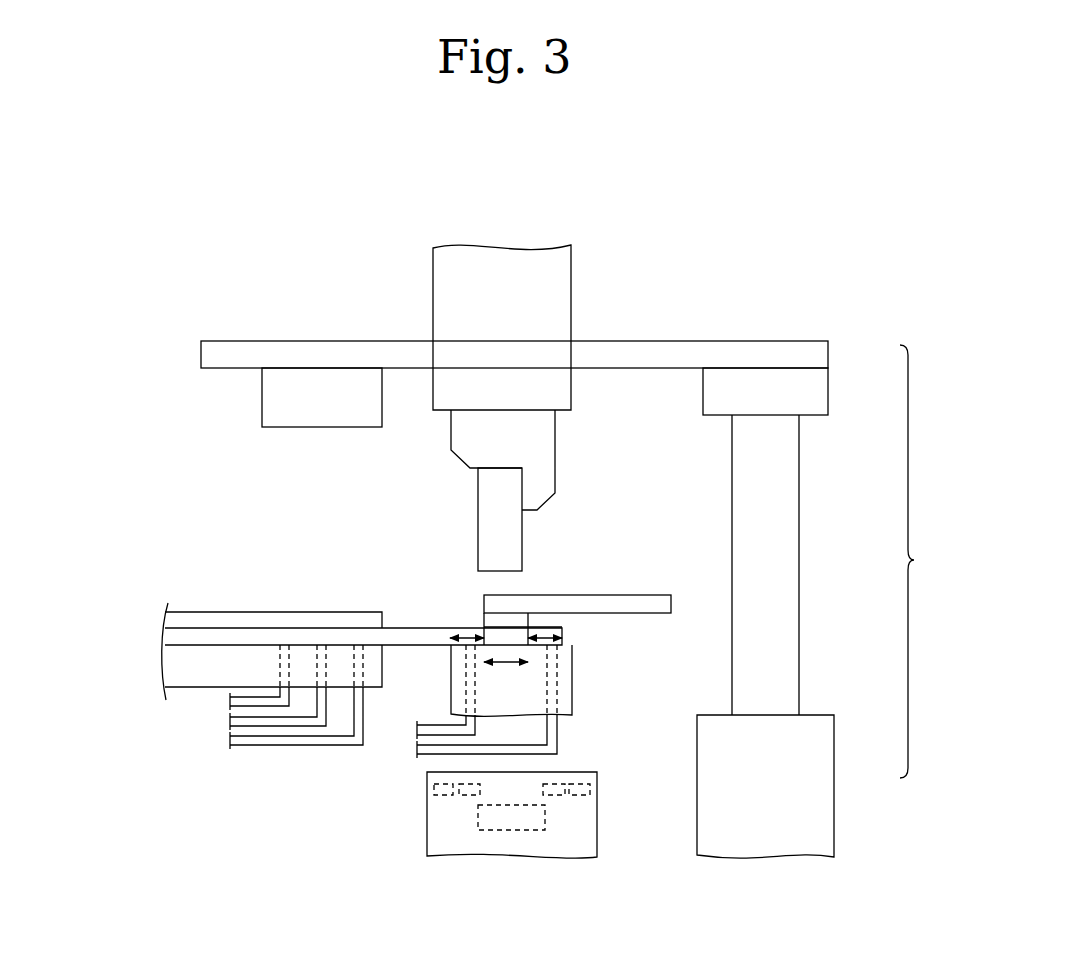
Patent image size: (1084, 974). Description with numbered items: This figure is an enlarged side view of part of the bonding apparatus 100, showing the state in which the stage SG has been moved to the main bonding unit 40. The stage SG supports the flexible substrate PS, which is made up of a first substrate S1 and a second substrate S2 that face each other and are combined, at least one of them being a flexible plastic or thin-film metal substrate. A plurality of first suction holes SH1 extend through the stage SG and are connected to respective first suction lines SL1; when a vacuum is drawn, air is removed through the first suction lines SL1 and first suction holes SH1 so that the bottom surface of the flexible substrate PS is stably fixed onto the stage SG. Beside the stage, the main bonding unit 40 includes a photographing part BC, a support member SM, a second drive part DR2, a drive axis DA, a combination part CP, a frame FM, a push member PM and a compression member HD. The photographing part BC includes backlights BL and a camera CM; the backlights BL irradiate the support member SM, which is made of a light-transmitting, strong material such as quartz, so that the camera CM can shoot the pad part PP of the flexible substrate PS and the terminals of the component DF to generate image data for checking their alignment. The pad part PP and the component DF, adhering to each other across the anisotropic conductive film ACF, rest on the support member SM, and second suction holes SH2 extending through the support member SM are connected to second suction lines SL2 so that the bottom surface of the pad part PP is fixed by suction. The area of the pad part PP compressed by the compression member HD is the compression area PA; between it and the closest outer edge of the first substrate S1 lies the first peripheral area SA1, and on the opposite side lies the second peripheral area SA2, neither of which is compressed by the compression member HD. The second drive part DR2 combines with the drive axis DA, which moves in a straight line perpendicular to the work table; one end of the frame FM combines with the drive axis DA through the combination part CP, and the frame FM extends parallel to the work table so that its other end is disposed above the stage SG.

The bonding apparatus 100 is at (690, 267).
The frame FM is at (818, 356).
The push member PM is at (272, 399).
The combination part CP is at (818, 389).
The drive axis DA is at (788, 483).
The second drive part DR2 is at (825, 772).
The main bonding unit 40 is at (921, 561).
The compression member HD is at (518, 541).
The component DF is at (656, 598).
The pad part PP is at (508, 622).
The anisotropic conductive film ACF is at (492, 624).
The flexible substrate PS is at (314, 648).
The second substrate S2 is at (166, 620).
The first substrate S1 is at (166, 636).
The stage SG is at (165, 668).
The first suction holes SH1 is at (352, 666).
The first suction lines SL1 is at (232, 740).
The support member SM is at (572, 697).
The second suction holes SH2 is at (558, 665).
The second suction lines SL2 is at (550, 735).
The first peripheral area SA1 is at (455, 646).
The second peripheral area SA2 is at (547, 623).
The compression area PA is at (506, 677).
The photographing part BC is at (456, 817).
The backlights BL is at (434, 790).
The cameras CM is at (478, 818).